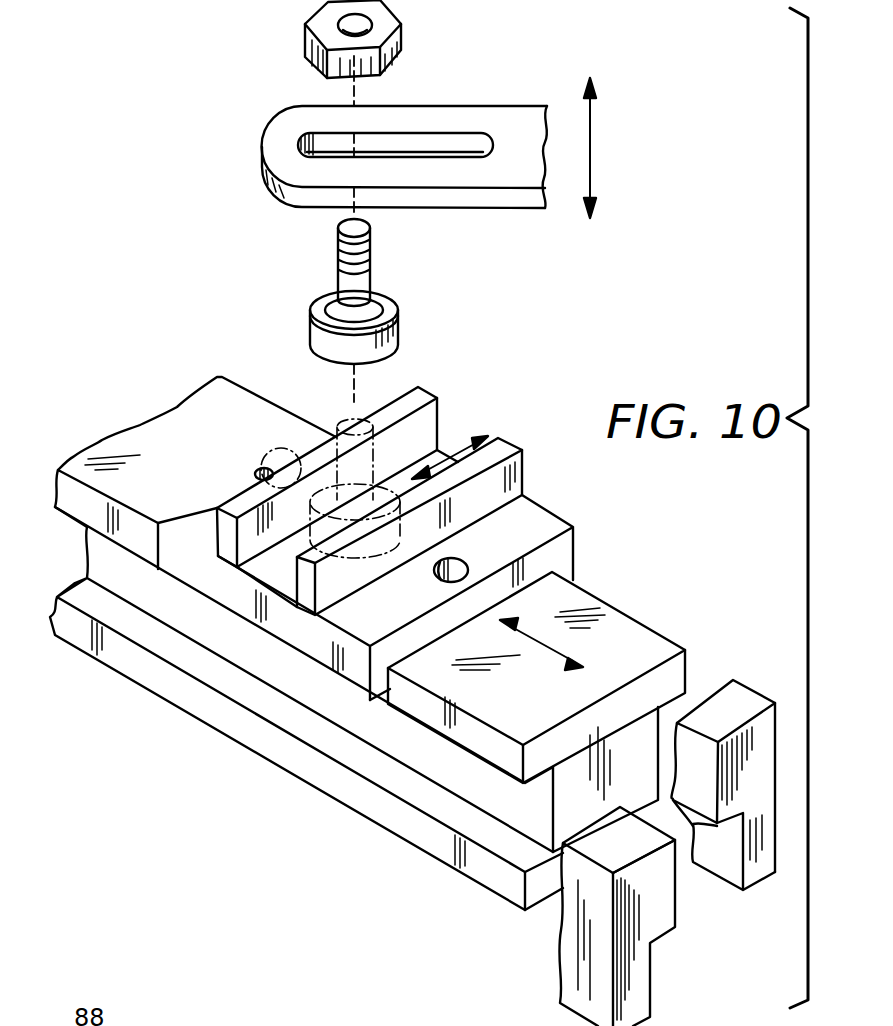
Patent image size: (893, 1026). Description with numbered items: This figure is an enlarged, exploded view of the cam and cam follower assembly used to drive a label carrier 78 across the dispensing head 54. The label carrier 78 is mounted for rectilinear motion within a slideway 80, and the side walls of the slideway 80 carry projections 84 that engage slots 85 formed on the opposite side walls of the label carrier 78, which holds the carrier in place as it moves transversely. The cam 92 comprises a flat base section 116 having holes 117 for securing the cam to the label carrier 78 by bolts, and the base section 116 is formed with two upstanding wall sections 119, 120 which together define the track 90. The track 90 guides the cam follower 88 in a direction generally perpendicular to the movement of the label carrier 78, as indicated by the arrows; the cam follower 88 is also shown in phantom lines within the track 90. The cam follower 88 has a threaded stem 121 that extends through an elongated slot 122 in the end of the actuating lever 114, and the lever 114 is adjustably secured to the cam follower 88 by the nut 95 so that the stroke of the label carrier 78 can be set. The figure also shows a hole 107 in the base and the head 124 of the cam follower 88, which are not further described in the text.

The dispensing head 54 is at (567, 958).
The label carrier 78 is at (626, 630).
The slideway 80 is at (702, 884).
The projection 84 is at (693, 766).
The slot 85 is at (397, 737).
The cam follower 88 is at (404, 309).
The track 90 is at (452, 440).
The cam 92 is at (266, 453).
The nut 95 is at (322, 20).
The hole 107 is at (458, 558).
The actuating lever 114 is at (262, 143).
The base section 116 is at (567, 520).
The holes 117 is at (253, 459).
The upstanding wall section 119 is at (307, 463).
The upstanding wall section 120 is at (505, 443).
The threaded stem 121 is at (336, 243).
The elongated slot 122 is at (335, 145).
The screw head 124 is at (312, 327).